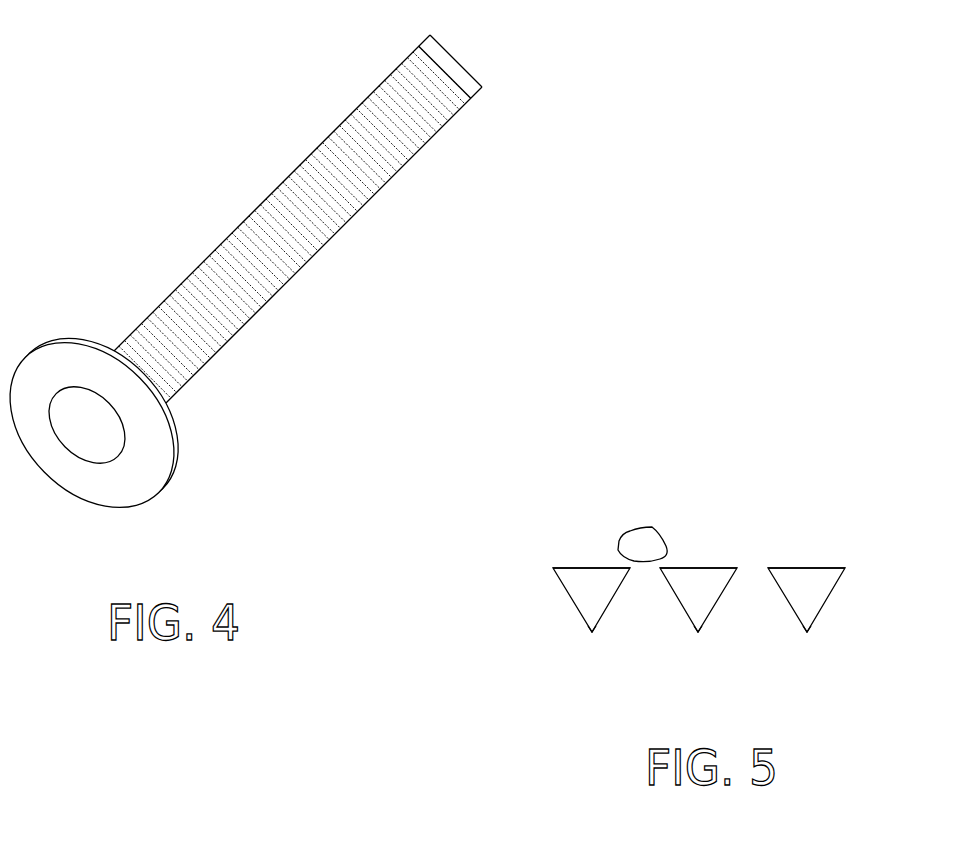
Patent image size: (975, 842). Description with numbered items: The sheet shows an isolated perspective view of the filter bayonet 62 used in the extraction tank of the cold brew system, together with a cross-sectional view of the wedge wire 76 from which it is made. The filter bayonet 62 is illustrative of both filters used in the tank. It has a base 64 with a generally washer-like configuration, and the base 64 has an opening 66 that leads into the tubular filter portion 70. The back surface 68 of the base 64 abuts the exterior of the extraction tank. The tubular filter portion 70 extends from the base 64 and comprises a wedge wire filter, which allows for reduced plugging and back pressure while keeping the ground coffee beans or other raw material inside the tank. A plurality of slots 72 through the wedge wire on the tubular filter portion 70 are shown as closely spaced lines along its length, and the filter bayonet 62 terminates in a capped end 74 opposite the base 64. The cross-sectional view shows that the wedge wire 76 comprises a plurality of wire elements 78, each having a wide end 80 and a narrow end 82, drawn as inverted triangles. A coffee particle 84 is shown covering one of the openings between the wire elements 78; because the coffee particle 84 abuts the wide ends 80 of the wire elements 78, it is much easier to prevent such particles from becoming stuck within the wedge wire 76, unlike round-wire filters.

In FIG. 4, the filter bayonet 62 is at (252, 287).
In FIG. 4, the base 64 is at (121, 434).
In FIG. 4, the opening 66 is at (70, 436).
In FIG. 4, the back surface 68 is at (173, 425).
In FIG. 4, the tubular filter portion 70 is at (309, 207).
In FIG. 4, the slots 72 is at (397, 160).
In FIG. 4, the capped end 74 is at (457, 53).
In FIG. 5, the wedge wire 76 is at (728, 567).
In FIG. 5, the wire elements 78 is at (577, 578).
In FIG. 5, the wide end 80 is at (588, 567).
In FIG. 5, the narrow end 82 is at (593, 635).
In FIG. 5, the coffee particle 84 is at (648, 525).